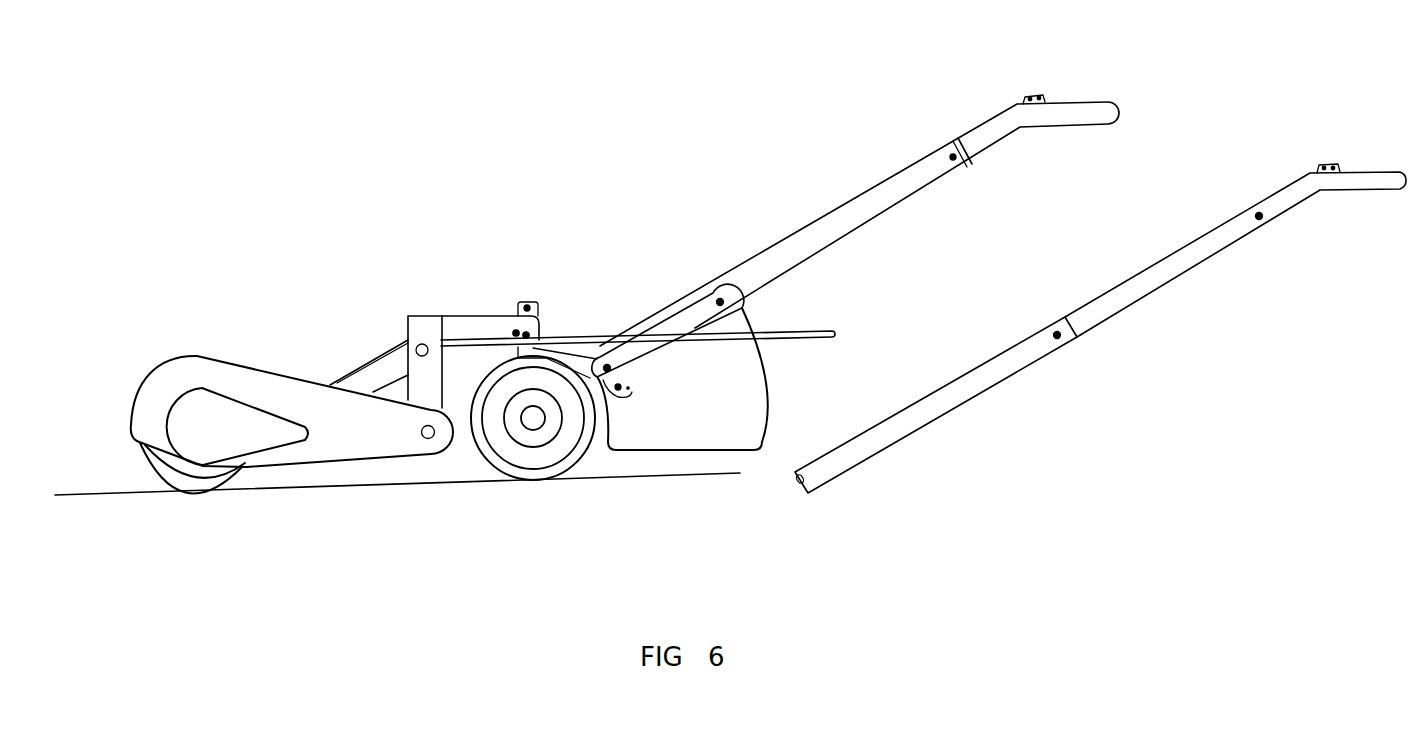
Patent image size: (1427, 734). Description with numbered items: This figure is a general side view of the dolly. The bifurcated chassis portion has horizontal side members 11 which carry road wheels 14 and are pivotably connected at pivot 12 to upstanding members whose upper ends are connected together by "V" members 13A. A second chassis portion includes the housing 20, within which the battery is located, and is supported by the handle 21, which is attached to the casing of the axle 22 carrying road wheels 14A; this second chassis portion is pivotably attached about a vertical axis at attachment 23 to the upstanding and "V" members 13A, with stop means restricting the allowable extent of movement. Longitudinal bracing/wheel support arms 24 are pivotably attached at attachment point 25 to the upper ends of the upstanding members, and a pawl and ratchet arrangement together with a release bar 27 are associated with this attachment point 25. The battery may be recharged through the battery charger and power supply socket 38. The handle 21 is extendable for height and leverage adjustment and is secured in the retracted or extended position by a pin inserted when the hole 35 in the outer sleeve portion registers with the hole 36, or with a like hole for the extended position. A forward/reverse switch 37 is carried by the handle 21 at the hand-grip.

The horizontal side members 11 is at (318, 442).
The pivotable connection 12 is at (428, 442).
The road wheels 14 is at (192, 468).
The road wheels 14A is at (518, 456).
The "V" members 13A is at (453, 328).
The housing 20 is at (692, 428).
The handle 21 is at (782, 240).
The axle 22 is at (538, 424).
The pivotable attachment 23 is at (521, 304).
The longitudinal bracing/wheel support arms 24 is at (355, 378).
The pivotable attachment point 25 is at (408, 340).
The release bar 27 is at (780, 328).
The hole 35 is at (943, 157).
The hole 36 is at (1263, 223).
The forward/reverse switch 37 is at (1030, 96).
The battery charger and power supply socket 38 is at (628, 396).